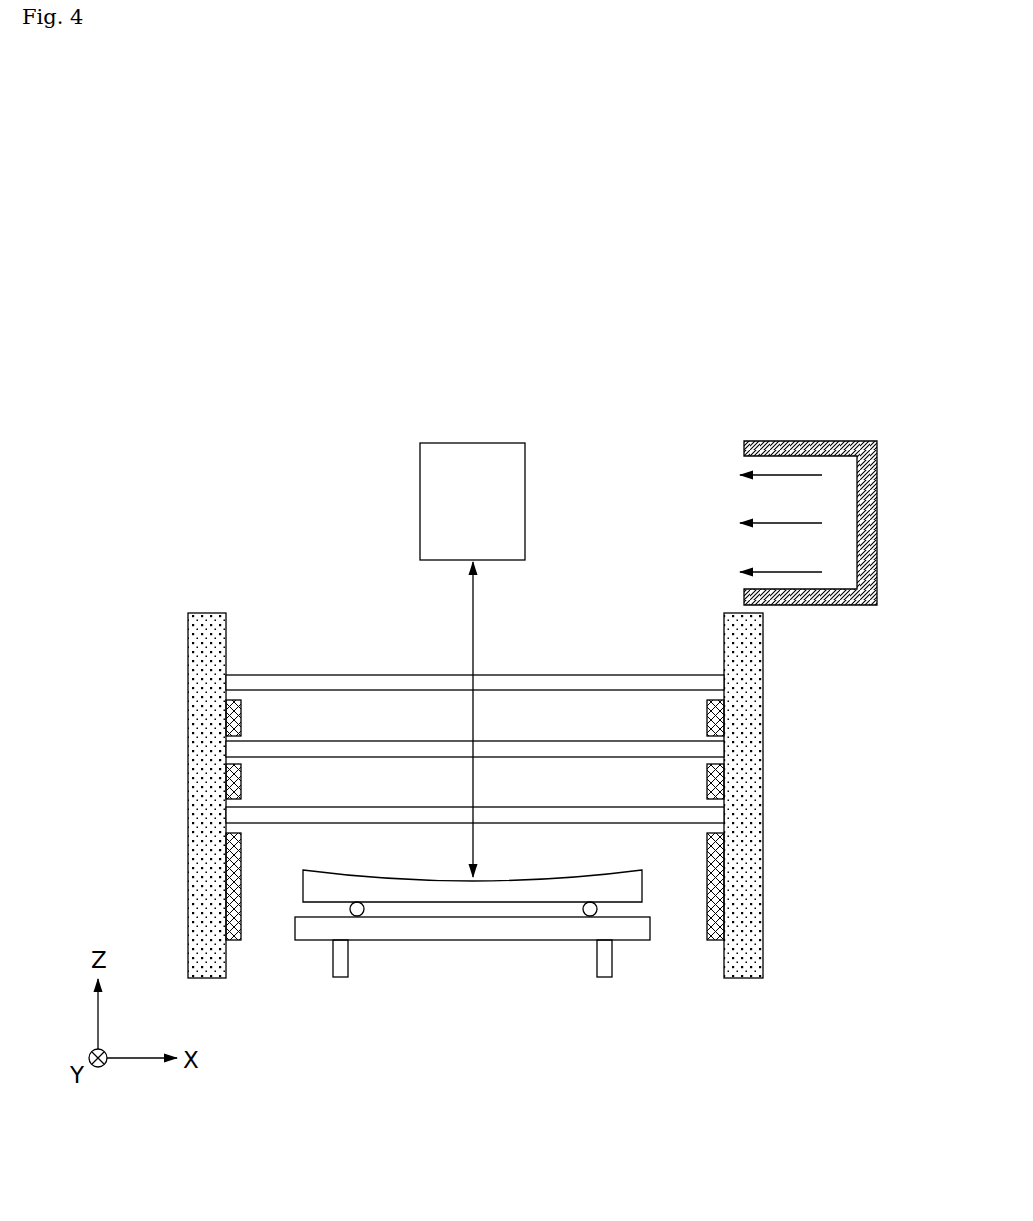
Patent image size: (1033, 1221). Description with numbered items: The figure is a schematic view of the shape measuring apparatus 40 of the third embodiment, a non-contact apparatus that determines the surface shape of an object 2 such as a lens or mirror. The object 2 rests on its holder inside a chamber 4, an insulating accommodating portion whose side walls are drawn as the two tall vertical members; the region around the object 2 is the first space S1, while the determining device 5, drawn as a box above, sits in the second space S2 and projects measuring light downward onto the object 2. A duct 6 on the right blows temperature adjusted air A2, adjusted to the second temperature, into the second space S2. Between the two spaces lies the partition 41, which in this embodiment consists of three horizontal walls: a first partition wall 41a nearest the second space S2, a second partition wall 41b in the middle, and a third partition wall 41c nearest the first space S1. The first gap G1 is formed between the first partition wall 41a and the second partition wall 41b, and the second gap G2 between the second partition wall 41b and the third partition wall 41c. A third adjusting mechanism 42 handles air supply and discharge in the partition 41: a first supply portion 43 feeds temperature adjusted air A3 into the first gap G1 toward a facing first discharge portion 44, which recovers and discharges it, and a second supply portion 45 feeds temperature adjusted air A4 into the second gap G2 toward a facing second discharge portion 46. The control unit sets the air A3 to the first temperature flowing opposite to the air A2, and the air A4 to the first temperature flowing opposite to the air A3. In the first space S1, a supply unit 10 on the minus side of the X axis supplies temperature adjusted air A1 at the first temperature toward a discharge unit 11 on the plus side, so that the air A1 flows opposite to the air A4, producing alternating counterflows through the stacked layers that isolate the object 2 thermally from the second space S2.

The shape measuring apparatus 40 is at (690, 330).
The object 2 is at (558, 886).
The chamber 4 is at (763, 665).
The determining device 5 is at (525, 497).
The duct 6 is at (797, 441).
The supply unit 10 is at (236, 890).
The discharge unit 11 is at (713, 883).
The partition 41 is at (401, 744).
The first partition wall 41a is at (235, 683).
The second partition wall 41b is at (235, 750).
The third partition wall 41c is at (427, 803).
The third adjusting mechanism 42 is at (731, 721).
The first supply portion 43 is at (241, 716).
The first discharge portion 44 is at (707, 720).
The second supply portion 45 is at (707, 779).
The second discharge portion 46 is at (241, 783).
The first space S1 is at (272, 920).
The second space S2 is at (361, 525).
The first gap G1 is at (331, 713).
The second gap G2 is at (332, 785).
The temperature adjusted air A1 is at (432, 853).
The temperature adjusted air A2 is at (576, 657).
The temperature adjusted air A3 is at (433, 716).
The temperature adjusted air A4 is at (577, 787).